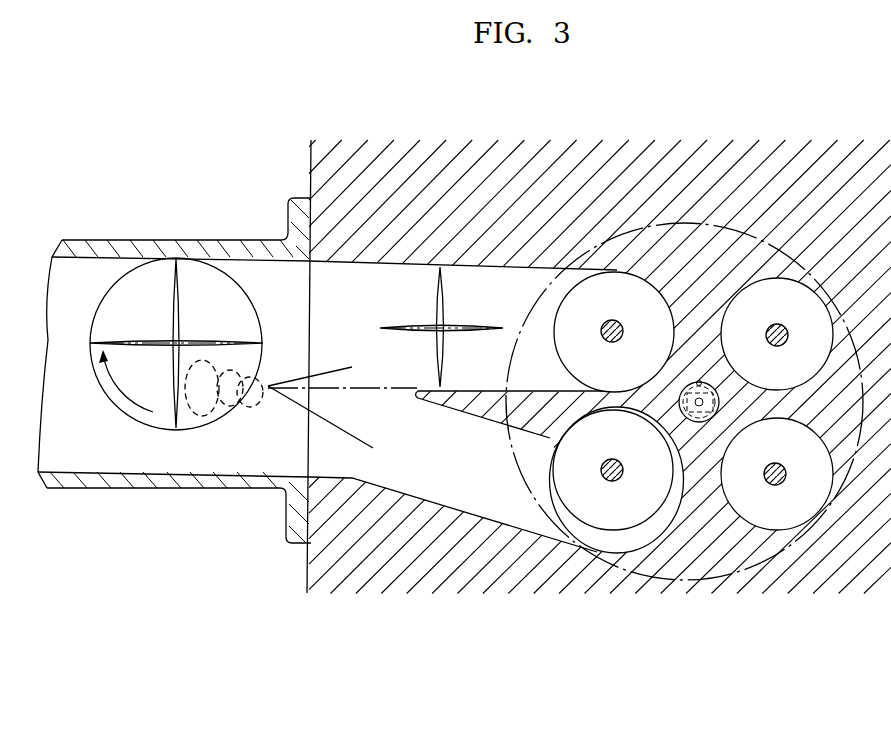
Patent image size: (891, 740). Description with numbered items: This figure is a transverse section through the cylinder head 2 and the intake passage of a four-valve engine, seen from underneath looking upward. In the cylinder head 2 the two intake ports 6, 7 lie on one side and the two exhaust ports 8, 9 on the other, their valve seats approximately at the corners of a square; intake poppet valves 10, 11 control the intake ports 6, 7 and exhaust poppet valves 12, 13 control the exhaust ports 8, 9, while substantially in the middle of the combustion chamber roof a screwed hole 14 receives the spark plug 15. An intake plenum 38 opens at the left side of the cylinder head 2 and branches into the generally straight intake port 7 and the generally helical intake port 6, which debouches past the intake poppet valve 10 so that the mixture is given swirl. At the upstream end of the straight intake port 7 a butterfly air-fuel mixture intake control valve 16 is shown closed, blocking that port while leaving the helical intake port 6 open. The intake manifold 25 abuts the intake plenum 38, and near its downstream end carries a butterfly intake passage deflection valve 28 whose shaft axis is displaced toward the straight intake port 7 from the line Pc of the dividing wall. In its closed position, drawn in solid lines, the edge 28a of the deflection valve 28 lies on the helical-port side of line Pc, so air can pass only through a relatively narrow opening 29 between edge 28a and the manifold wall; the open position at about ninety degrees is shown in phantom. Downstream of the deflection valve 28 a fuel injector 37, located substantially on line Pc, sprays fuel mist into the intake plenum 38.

The cylinder head 2 is at (312, 167).
The intake port 6 is at (503, 498).
The intake port 7 is at (500, 266).
The exhaust port 8 is at (692, 488).
The exhaust port 9 is at (702, 332).
The poppet valve 10 is at (623, 471).
The poppet valve 11 is at (623, 333).
The poppet valve 12 is at (786, 474).
The poppet valve 13 is at (788, 335).
The screwed hole 14 is at (699, 381).
The spark plug 15 is at (700, 424).
The air-fuel mixture intake control valve 16 is at (443, 286).
The intake manifold 25 is at (84, 481).
The intake passage deflection valve 28 is at (179, 286).
The edge 28a is at (178, 418).
The opening 29 is at (181, 455).
The fuel injector 37 is at (258, 401).
The intake plenum 38 is at (362, 390).
The line of the dividing wall Pc is at (398, 388).